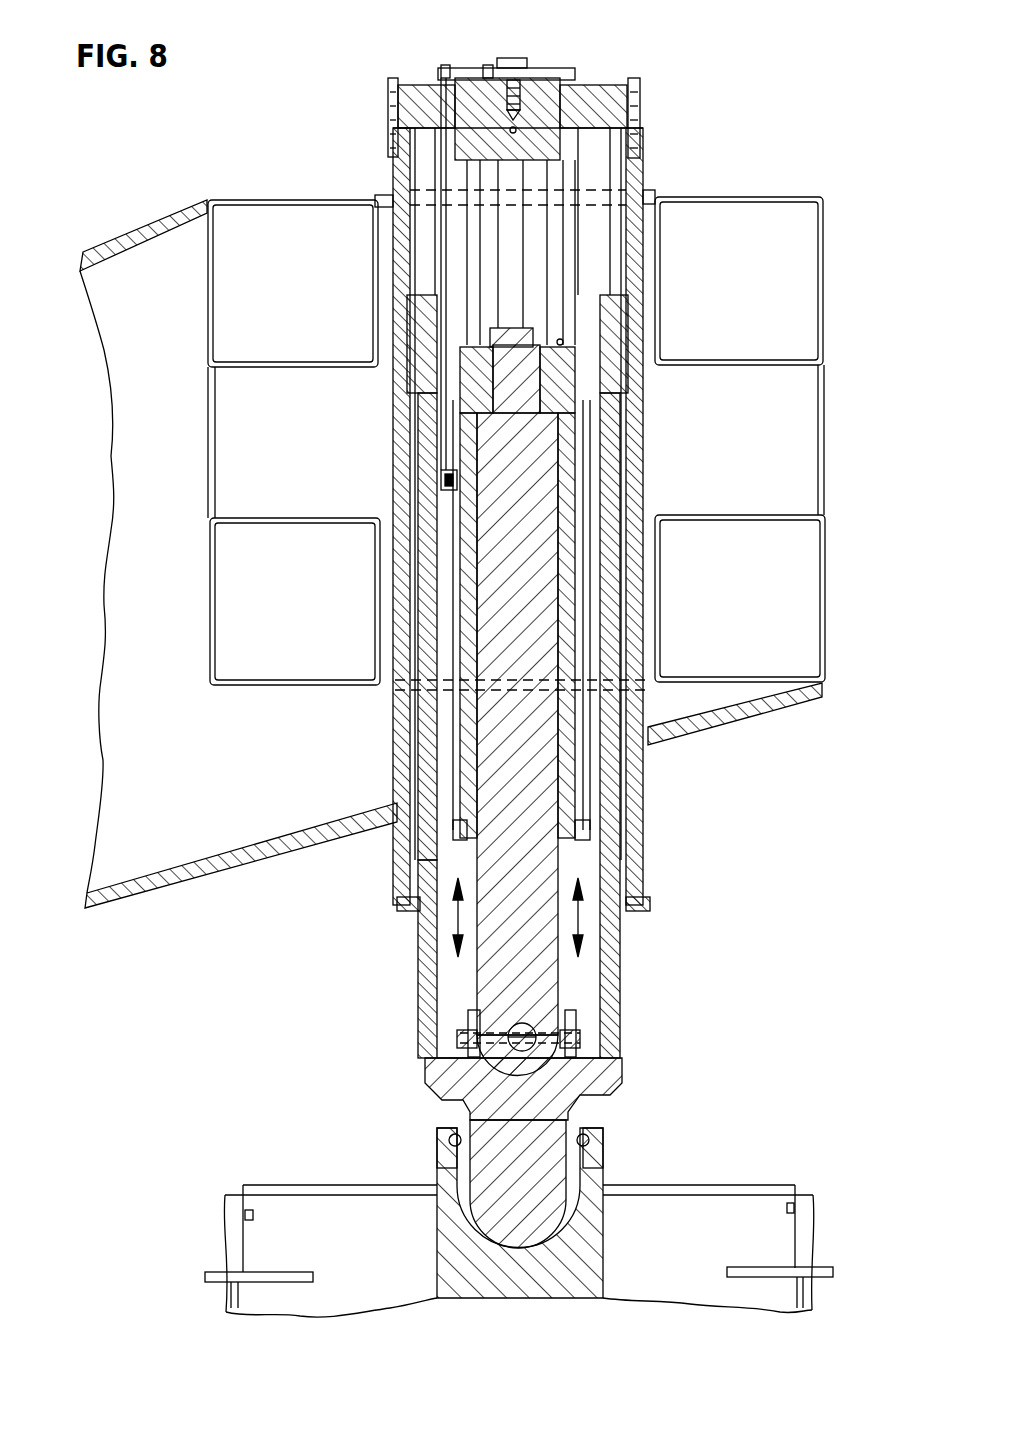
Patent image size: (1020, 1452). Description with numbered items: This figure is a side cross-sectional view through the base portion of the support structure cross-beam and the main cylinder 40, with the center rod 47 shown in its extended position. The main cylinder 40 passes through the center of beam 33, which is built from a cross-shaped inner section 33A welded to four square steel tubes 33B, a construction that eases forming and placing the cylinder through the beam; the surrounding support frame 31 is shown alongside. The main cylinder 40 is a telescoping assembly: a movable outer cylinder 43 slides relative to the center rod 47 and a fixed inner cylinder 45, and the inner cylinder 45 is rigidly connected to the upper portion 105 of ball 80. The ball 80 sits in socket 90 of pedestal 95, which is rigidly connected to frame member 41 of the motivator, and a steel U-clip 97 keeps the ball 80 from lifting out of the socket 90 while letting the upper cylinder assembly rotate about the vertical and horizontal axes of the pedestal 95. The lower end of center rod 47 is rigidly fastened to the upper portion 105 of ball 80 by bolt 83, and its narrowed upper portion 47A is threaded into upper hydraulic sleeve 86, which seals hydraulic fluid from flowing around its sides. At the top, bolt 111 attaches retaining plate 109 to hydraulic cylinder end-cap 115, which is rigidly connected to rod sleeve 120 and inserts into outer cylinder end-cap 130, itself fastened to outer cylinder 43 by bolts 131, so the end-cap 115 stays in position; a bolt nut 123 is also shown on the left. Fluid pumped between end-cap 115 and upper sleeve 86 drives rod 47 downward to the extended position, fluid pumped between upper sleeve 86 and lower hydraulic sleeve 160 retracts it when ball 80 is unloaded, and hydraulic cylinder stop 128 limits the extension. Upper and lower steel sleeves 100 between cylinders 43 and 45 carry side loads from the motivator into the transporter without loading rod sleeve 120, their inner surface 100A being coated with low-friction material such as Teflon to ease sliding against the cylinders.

The support frame 31 is at (167, 831).
The beam 33 is at (835, 350).
The cross-shaped inner section 33A is at (797, 492).
The square steel tubes 33B is at (284, 328).
The main cylinder 40 is at (665, 128).
The frame member 41 is at (693, 1200).
The movable outer cylinder 43 is at (640, 828).
The fixed inner cylinder 45 is at (425, 988).
The center rod 47 is at (528, 761).
The narrowed upper portion 47A is at (513, 337).
The ball 80 is at (540, 1195).
The bolt 83 is at (560, 1005).
The upper hydraulic sleeve 86 is at (553, 360).
The socket 90 is at (580, 1170).
The pedestal 95 is at (538, 1289).
The steel U-clip 97 is at (588, 1133).
The steel sleeves 100 is at (683, 856).
The inner surface 100A is at (652, 883).
The upper portion 105 is at (440, 1085).
The retaining plate 109 is at (545, 72).
The bolt 111 is at (488, 100).
The hydraulic cylinder end-cap 115 is at (537, 130).
The rod sleeve 120 is at (467, 720).
The bolt nut 123 is at (455, 488).
The hydraulic cylinder stop 128 is at (560, 440).
The outer cylinder end-cap 130 is at (420, 100).
The bolts 131 is at (393, 125).
The lower hydraulic sleeve 160 is at (567, 790).